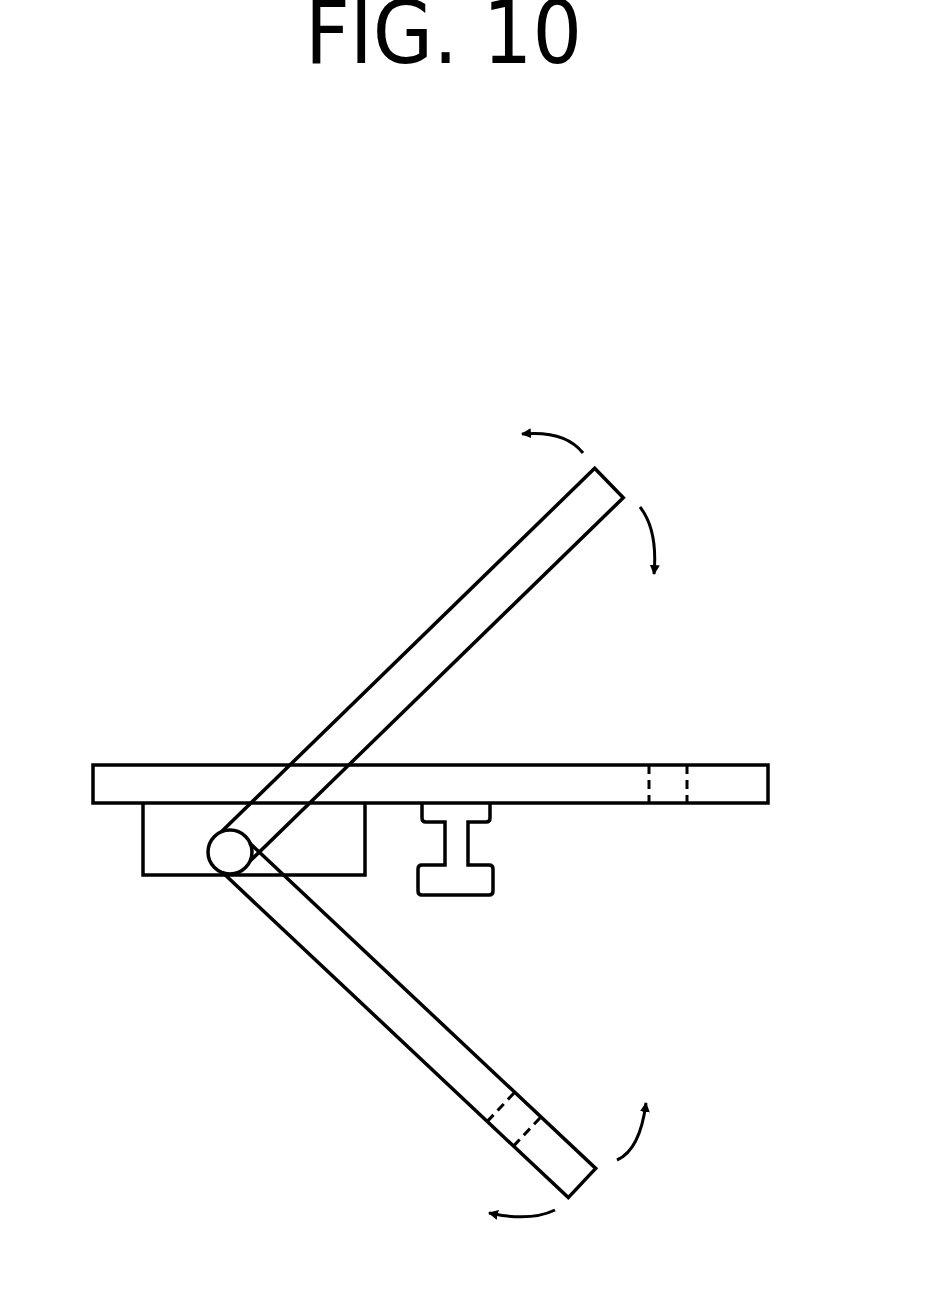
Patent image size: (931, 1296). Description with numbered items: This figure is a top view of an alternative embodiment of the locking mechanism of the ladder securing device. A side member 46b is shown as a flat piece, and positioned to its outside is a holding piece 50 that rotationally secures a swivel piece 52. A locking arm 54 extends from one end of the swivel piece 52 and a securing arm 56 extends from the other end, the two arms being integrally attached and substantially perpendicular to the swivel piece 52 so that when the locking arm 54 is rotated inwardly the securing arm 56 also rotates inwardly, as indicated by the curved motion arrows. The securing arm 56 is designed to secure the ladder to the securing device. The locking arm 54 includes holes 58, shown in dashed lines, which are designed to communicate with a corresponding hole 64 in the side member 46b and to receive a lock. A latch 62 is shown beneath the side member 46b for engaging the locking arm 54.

The second side piece 46b is at (200, 762).
The holding piece 50 is at (142, 847).
The swivel piece 52 is at (225, 852).
The locking arm 54 is at (310, 952).
The securing arm 56 is at (405, 648).
The hole 58 is at (518, 1118).
The latch 62 is at (493, 880).
The hole 64 is at (662, 780).